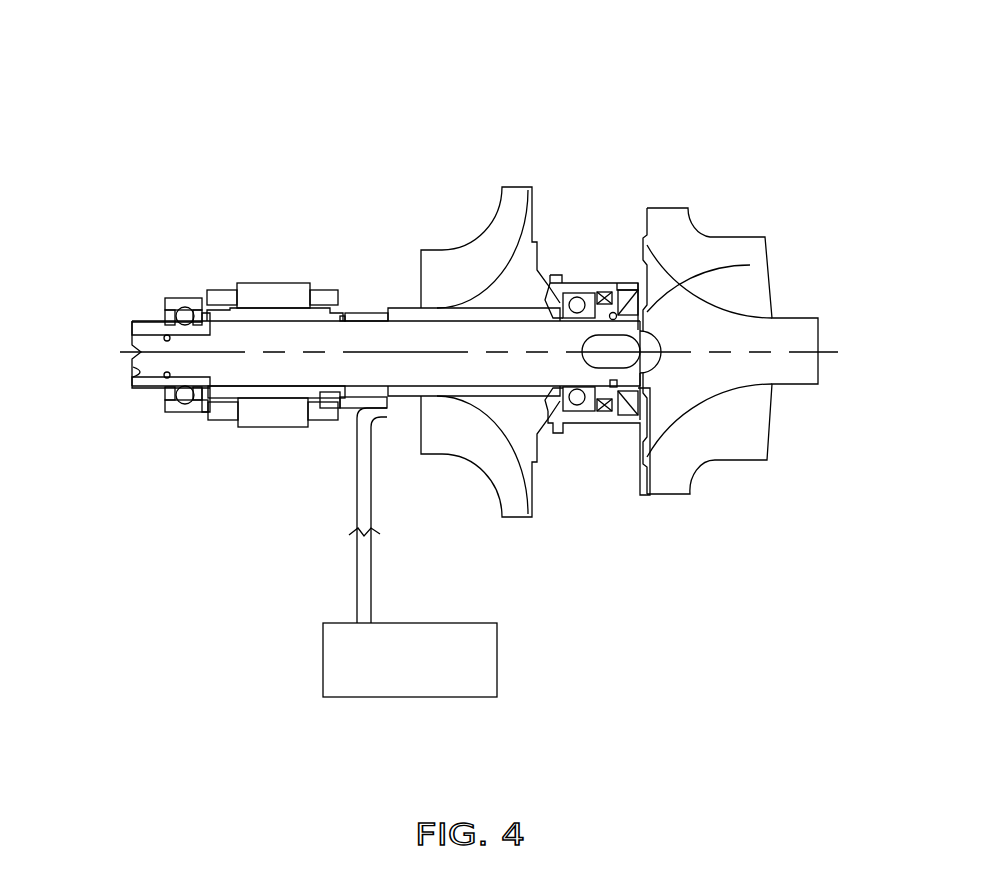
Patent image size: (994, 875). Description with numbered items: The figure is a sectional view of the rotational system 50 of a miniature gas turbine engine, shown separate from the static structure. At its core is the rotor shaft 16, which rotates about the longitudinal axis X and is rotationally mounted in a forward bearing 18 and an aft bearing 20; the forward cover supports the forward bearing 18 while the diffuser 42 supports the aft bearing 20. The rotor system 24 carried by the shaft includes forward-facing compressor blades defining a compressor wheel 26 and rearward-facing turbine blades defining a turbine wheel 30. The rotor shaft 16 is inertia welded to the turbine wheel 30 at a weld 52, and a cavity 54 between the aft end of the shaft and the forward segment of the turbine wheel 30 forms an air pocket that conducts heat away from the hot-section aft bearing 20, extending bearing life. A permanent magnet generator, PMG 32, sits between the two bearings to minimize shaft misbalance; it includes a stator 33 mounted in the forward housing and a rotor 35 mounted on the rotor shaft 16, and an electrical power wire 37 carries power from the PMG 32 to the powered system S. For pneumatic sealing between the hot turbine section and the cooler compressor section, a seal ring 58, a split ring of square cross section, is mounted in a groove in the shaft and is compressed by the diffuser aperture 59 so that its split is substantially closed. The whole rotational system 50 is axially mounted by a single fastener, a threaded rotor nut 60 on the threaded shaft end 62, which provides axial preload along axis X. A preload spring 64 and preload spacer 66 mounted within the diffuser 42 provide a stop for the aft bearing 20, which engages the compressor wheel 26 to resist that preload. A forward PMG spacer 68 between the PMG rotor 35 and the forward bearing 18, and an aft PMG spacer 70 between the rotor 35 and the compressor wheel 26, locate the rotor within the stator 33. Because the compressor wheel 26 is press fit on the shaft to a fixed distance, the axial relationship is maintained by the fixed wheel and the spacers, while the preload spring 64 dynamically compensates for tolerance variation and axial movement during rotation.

The rotor shaft 16 is at (480, 368).
The forward bearing 18 is at (183, 282).
The aft bearing 20 is at (626, 237).
The rotor system 24 is at (483, 315).
The compressor wheel 26 is at (519, 175).
The turbine wheel 30 is at (702, 379).
The PMG 32 is at (268, 270).
The stator 33 is at (275, 405).
The rotor 35 is at (355, 402).
The electrical power wire 37 is at (378, 548).
The diffuser 42 is at (597, 468).
The rotational system 50 is at (464, 135).
The weld 52 is at (750, 265).
The cavity 54 is at (632, 368).
The seal ring 58 is at (640, 292).
The diffuser aperture 59 is at (614, 418).
The rotor nut 60 is at (148, 308).
The threaded shaft end 62 is at (138, 362).
The preload spring 64 is at (606, 275).
The preload spacer 66 is at (599, 430).
The forward PMG spacer 68 is at (205, 410).
The aft PMG spacer 70 is at (355, 300).
The powered system S is at (447, 697).
The longitudinal axis X is at (830, 352).